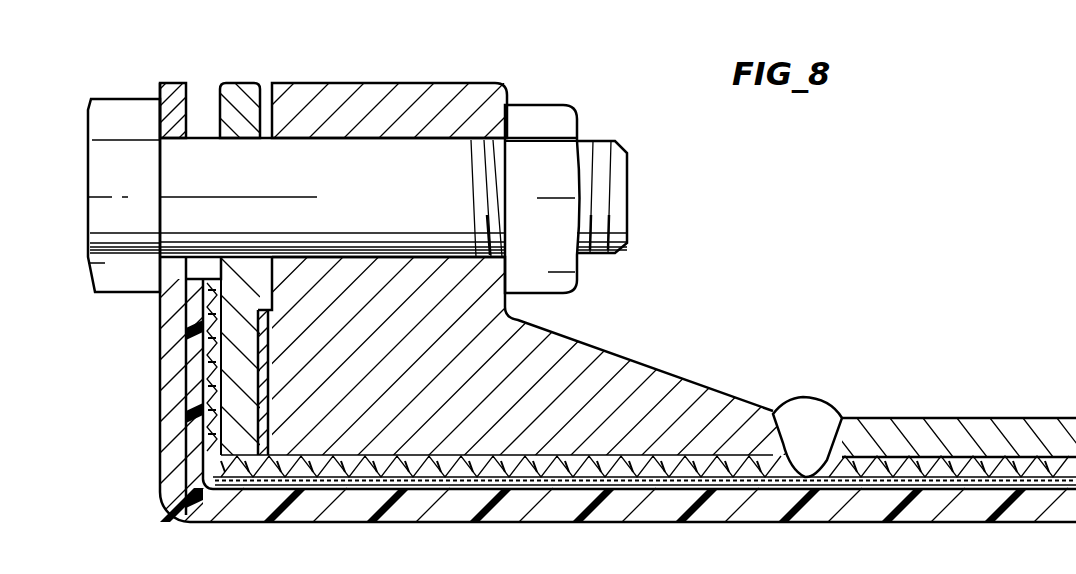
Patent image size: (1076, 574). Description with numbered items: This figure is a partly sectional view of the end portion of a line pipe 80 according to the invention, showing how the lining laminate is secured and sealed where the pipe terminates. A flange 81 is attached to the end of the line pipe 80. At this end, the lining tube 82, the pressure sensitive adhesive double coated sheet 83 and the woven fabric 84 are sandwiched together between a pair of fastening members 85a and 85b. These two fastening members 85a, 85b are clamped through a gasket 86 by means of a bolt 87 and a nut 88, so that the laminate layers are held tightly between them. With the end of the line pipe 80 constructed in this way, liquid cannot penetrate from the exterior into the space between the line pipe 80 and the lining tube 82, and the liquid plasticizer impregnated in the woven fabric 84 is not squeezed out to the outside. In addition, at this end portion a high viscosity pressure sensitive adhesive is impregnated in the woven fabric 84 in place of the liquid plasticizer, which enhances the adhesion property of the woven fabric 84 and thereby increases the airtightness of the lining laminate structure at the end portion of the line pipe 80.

The line pipe 80 is at (942, 425).
The flange 81 is at (406, 82).
The lining tube 82 is at (648, 512).
The pressure sensitive adhesive double coated sheet 83 is at (506, 488).
The woven fabric 84 is at (410, 470).
The fastening member 85a is at (240, 82).
The fastening member 85b is at (175, 82).
The gasket 86 is at (257, 378).
The bolt 87 is at (127, 103).
The nut 88 is at (538, 105).